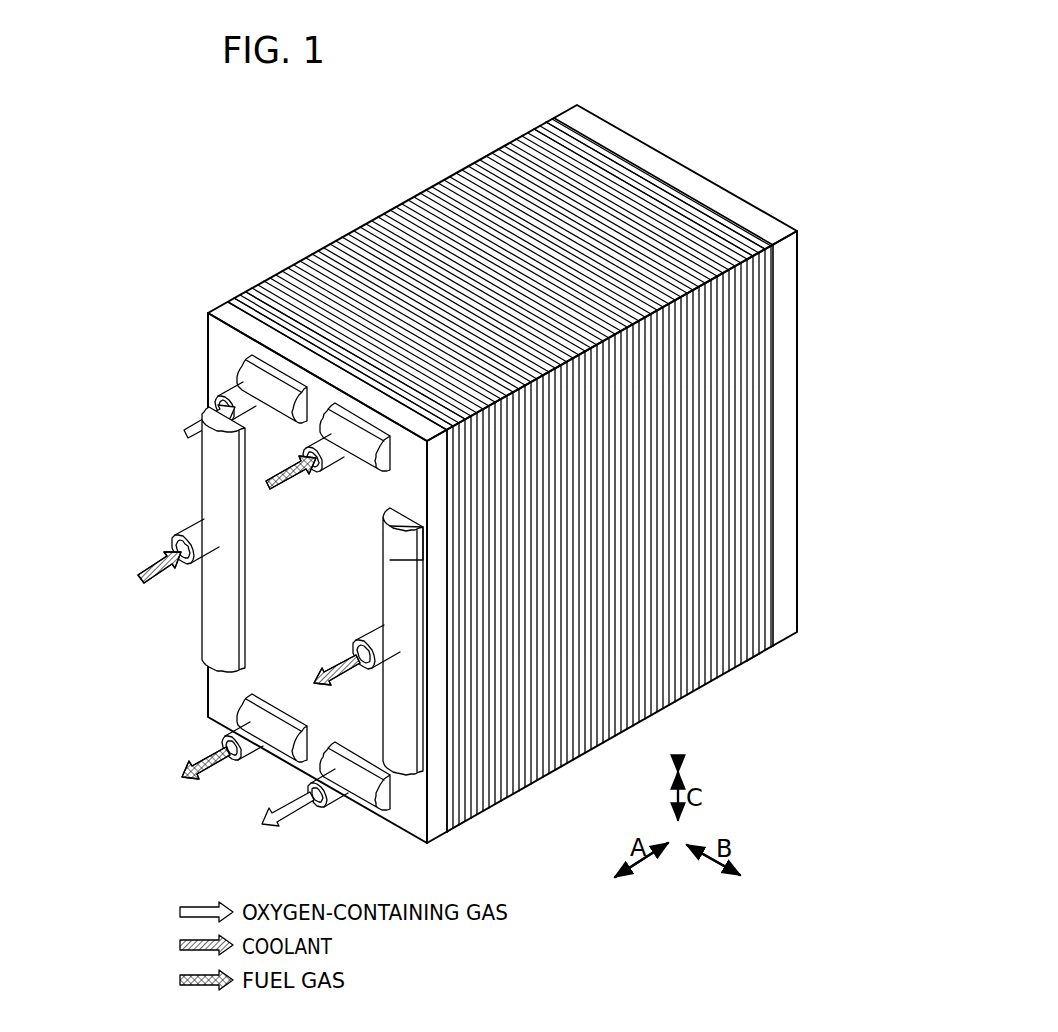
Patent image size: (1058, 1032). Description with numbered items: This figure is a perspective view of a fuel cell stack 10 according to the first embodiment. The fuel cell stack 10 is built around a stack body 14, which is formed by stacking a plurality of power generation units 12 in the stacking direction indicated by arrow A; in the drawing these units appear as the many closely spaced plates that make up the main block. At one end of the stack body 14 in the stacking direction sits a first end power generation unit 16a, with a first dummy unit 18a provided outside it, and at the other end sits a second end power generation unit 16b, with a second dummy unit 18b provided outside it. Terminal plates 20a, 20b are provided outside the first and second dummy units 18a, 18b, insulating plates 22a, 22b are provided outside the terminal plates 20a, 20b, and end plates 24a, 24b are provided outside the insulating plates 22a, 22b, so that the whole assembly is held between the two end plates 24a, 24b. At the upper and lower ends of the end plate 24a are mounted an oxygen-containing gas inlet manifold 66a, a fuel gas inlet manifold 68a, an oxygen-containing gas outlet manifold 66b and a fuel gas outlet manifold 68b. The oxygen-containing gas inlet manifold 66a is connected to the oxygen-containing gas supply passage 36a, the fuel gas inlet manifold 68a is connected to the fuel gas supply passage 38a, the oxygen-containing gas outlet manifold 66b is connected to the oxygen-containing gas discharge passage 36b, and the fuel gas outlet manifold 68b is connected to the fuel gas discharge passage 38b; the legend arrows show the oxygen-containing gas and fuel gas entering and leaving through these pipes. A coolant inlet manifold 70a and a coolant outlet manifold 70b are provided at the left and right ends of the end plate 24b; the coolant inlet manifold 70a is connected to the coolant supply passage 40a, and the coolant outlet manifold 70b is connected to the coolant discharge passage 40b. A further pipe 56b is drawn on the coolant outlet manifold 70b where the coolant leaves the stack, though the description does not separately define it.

The fuel cell stack 10 is at (610, 53).
The power generation unit 12 is at (425, 182).
The stack body 14 is at (332, 158).
The first end power generation unit 16a is at (511, 821).
The second end power generation unit 16b is at (743, 668).
The first dummy unit 18a is at (487, 833).
The second dummy unit 18b is at (762, 660).
The terminal plate 20a is at (284, 314).
The terminal plate 20b is at (683, 200).
The insulating plate 22a is at (251, 316).
The insulating plate 22b is at (710, 210).
The end plate 24a is at (207, 311).
The end plate 24b is at (742, 197).
The oxygen-containing gas supply passage 36a is at (240, 364).
The oxygen-containing gas discharge passage 36b is at (376, 810).
The fuel gas supply passage 38a is at (331, 457).
The fuel gas discharge passage 38b is at (240, 718).
The coolant supply passage 40a is at (216, 508).
The coolant discharge passage 40b is at (397, 540).
The coolant discharge pipe 56b is at (372, 637).
The oxygen-containing gas inlet manifold 66a is at (244, 377).
The oxygen-containing gas outlet manifold 66b is at (333, 750).
The fuel gas inlet manifold 68a is at (384, 455).
The fuel gas outlet manifold 68b is at (283, 731).
The coolant inlet manifold 70a is at (207, 475).
The coolant outlet manifold 70b is at (390, 572).